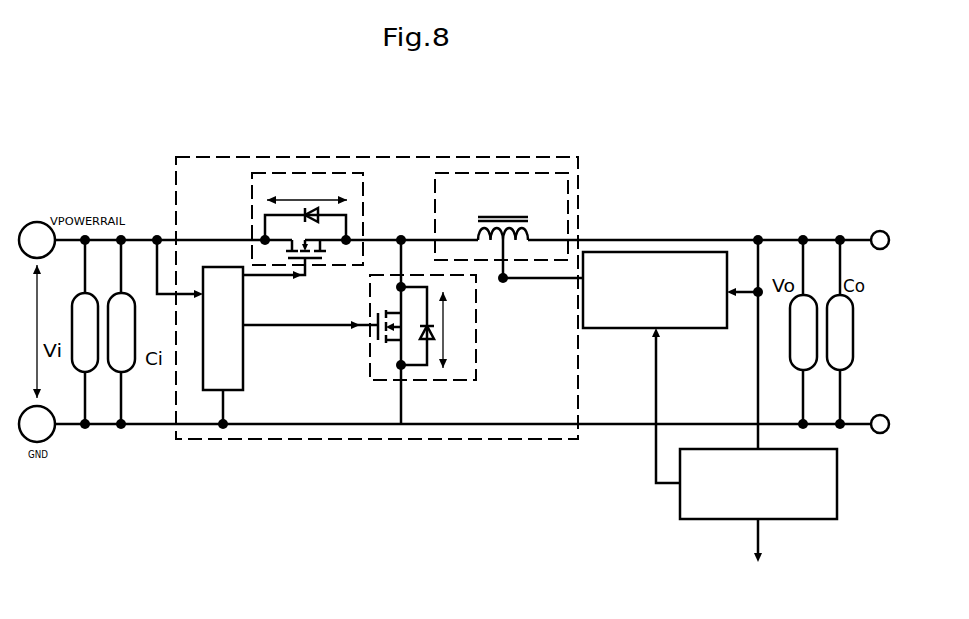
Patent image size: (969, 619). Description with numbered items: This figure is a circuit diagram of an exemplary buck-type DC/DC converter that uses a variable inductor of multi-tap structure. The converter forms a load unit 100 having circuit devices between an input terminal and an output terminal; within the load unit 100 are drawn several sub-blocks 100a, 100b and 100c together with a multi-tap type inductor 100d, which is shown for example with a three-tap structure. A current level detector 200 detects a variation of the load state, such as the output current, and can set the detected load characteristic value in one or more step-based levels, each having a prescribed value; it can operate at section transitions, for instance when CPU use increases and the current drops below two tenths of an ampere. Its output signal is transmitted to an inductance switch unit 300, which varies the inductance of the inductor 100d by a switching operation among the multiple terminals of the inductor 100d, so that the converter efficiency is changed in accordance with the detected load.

The load unit 100 is at (457, 439).
The IC (control integrated circuit) 100a is at (233, 390).
The high-side FET switching unit 100b is at (252, 200).
The low-side FET switching unit 100c is at (476, 355).
The multi-tap type inductor 100d is at (462, 173).
The current level detector 200 is at (710, 519).
The inductance switch unit 300 is at (686, 328).